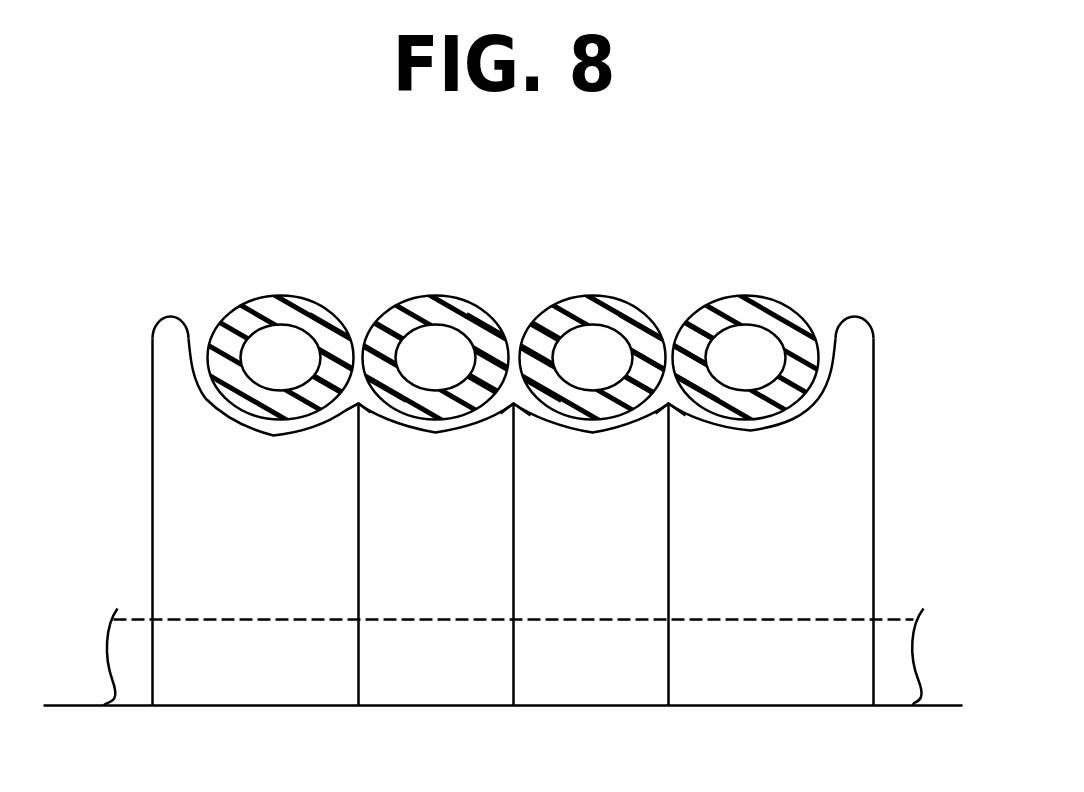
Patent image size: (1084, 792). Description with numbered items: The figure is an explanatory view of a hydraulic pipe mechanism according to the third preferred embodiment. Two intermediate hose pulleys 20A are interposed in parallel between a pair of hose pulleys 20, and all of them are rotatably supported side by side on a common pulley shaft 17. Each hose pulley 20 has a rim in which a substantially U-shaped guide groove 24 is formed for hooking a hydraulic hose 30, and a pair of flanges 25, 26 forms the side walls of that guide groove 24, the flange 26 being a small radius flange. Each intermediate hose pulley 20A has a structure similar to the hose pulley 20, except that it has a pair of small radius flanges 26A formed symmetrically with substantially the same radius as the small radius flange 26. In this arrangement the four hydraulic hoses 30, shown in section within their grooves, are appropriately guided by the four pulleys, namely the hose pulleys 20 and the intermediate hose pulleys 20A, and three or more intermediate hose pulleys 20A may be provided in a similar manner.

The pulley shaft 17 is at (900, 663).
The hose pulley 20 is at (152, 472).
The intermediate hose pulley 20A is at (358, 547).
The guide groove 24 is at (196, 357).
The flange 25 is at (170, 327).
The small radius flange 26 is at (205, 426).
The small radius flanges 26A is at (370, 400).
The hydraulic hose 30 is at (280, 310).